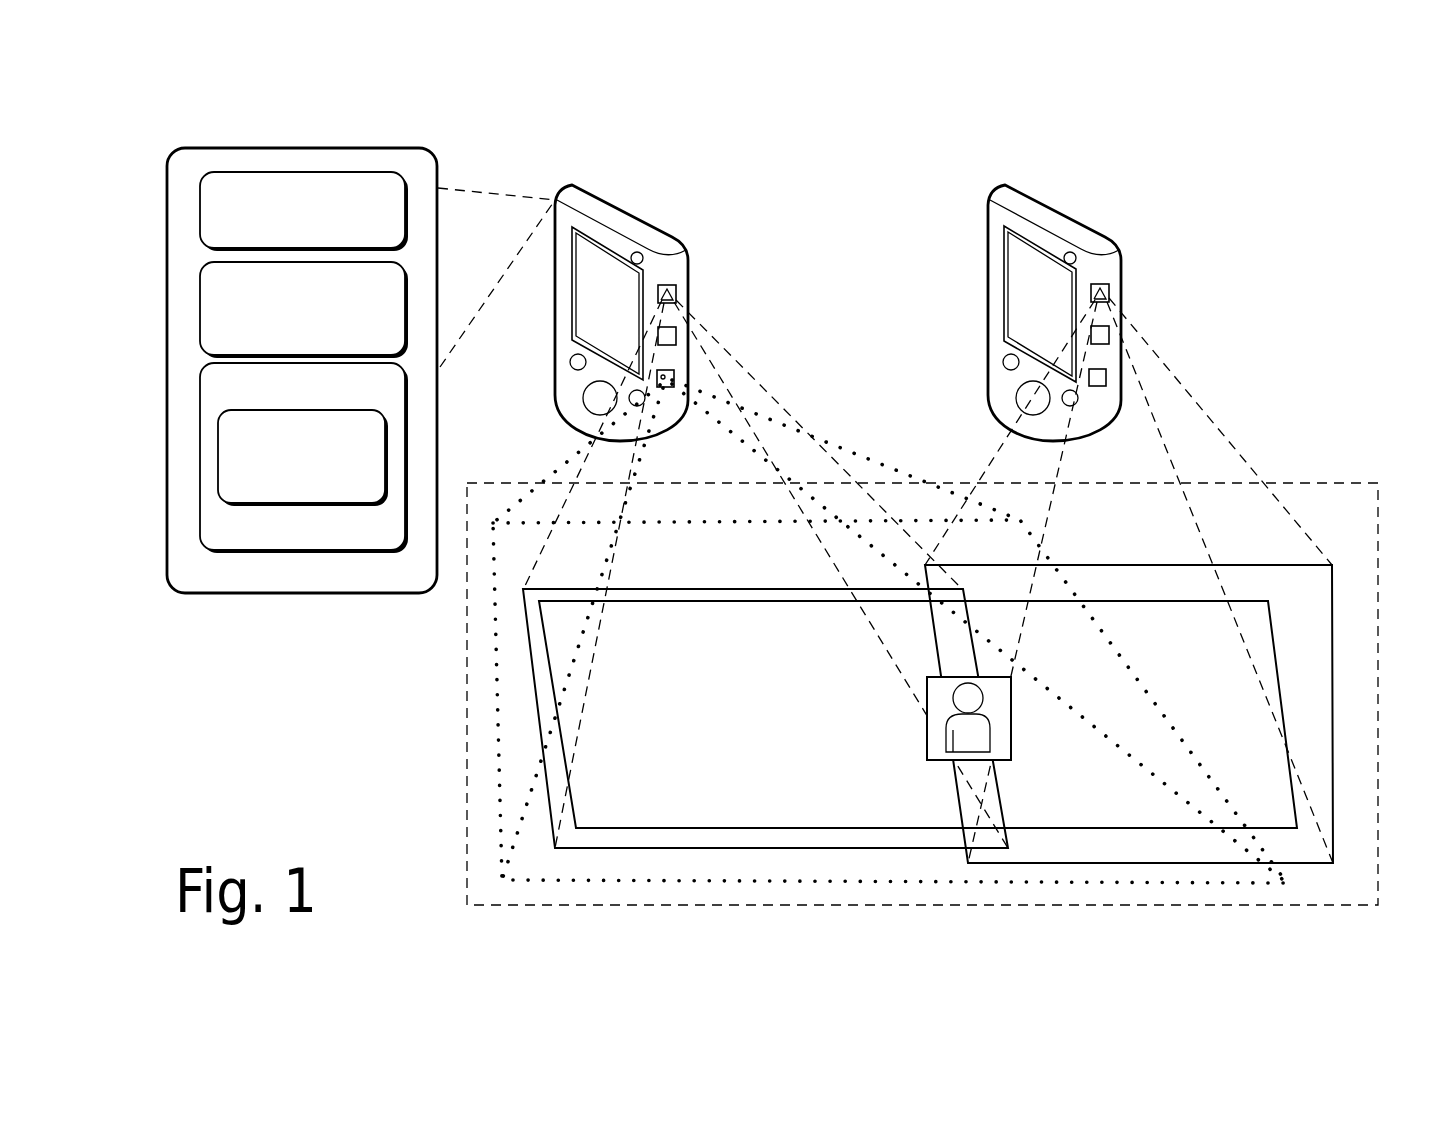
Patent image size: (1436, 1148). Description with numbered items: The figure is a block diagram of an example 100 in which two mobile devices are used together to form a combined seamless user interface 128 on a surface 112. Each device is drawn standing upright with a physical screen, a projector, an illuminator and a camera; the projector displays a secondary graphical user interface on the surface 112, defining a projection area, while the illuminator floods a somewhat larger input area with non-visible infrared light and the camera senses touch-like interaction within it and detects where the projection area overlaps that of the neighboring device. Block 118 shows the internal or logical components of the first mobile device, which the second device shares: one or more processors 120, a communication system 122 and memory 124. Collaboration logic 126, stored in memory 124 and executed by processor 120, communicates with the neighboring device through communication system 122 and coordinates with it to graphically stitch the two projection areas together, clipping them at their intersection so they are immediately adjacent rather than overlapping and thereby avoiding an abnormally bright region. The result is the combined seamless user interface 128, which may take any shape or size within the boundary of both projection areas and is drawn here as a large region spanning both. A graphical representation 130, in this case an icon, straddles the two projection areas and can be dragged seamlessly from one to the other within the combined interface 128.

The environment 100 is at (1307, 142).
The surface 112 is at (922, 694).
The block 118 is at (373, 163).
The processor 120 is at (304, 211).
The communication system 122 is at (304, 310).
The memory 124 is at (304, 458).
The collaboration logic 126 is at (303, 458).
The combined seamless user interface 128 is at (918, 714).
The graphical representation 130 is at (921, 725).